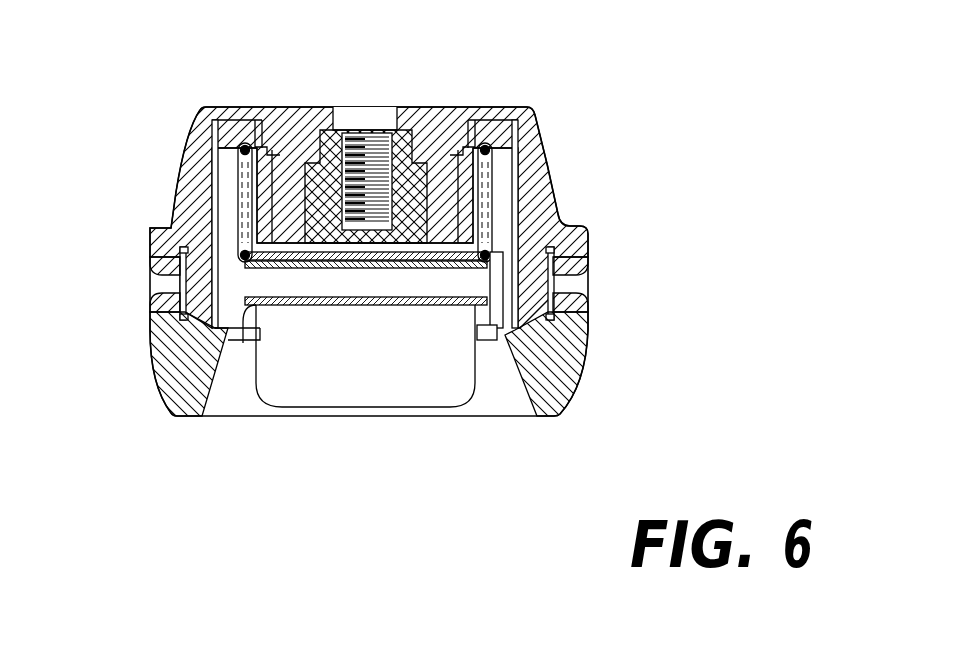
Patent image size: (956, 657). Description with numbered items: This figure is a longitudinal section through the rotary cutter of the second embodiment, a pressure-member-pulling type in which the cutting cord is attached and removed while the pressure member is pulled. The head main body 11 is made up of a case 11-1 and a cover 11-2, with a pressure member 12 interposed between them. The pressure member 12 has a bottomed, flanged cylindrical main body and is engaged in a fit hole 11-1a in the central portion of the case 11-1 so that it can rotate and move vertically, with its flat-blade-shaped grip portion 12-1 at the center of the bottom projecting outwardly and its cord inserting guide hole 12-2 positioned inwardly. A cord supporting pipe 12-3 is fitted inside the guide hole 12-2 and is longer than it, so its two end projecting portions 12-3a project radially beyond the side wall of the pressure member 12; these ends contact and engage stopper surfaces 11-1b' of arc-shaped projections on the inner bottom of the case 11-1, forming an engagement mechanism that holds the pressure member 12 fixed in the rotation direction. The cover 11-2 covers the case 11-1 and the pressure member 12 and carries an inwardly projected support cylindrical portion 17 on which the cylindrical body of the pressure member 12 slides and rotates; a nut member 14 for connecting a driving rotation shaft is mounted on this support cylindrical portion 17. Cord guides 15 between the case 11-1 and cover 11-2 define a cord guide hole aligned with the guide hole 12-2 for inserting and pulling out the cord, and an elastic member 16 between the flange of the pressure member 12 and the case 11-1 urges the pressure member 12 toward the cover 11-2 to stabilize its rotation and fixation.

The head main body 11 is at (166, 140).
The case 11-1 is at (555, 378).
The fit hole 11-1a is at (255, 333).
The stopper surface 11-1b' is at (604, 290).
The cover 11-2 is at (450, 190).
The pressure member 12 is at (470, 213).
The grip portion 12-1 is at (320, 392).
The cord inserting guide hole 12-2 is at (298, 265).
The cord supporting pipe 12-3 is at (430, 305).
The end projecting portion 12-3a is at (240, 331).
The nut member 14 is at (432, 160).
The cord guide 15 is at (160, 273).
The elastic member 16 is at (240, 187).
The support cylindrical portion 17 is at (492, 176).